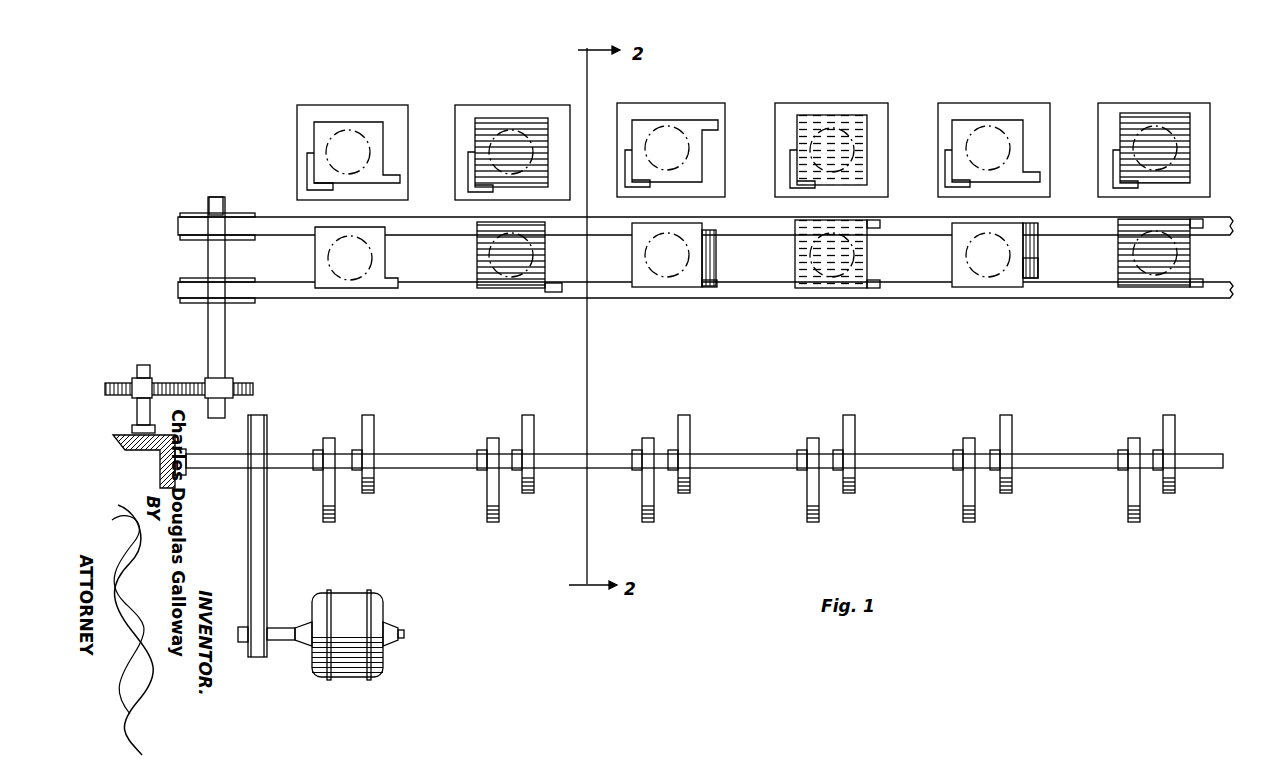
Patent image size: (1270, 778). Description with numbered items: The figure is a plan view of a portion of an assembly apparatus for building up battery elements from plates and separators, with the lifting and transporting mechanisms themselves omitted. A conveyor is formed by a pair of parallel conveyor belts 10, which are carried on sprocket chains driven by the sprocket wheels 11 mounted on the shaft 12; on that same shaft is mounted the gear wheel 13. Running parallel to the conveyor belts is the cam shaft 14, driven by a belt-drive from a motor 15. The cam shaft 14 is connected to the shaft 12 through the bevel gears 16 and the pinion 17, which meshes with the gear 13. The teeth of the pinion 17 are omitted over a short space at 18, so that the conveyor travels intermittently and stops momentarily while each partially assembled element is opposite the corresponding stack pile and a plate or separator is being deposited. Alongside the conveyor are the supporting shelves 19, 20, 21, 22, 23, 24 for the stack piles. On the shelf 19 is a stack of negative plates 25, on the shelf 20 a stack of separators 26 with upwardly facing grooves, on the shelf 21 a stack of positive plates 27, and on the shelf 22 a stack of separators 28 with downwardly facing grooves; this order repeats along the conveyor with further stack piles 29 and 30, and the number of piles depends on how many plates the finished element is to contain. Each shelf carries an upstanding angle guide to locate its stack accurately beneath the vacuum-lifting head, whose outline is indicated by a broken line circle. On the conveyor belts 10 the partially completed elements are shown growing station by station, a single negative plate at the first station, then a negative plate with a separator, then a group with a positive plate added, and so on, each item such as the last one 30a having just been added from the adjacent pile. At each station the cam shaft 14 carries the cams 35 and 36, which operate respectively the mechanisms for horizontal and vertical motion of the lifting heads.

The conveyor belts 10 is at (180, 290).
The sprocket wheels 11 is at (230, 216).
The shaft 12 is at (226, 342).
The gear wheel 13 is at (255, 387).
The cam shaft 14 is at (219, 466).
The motor 15 is at (341, 593).
The bevel gears 16 is at (150, 470).
The pinion 17 is at (117, 382).
The toothless space 18 is at (152, 384).
The supporting shelf 19 is at (305, 106).
The supporting shelf 20 is at (462, 107).
The supporting shelf 21 is at (627, 108).
The supporting shelf 22 is at (787, 106).
The supporting shelf 23 is at (945, 108).
The supporting shelf 24 is at (1105, 108).
The stack of negative plates 25 is at (343, 125).
The stack of separators 26 is at (500, 120).
The stack of positive plates 27 is at (668, 125).
The stack of separators 28 is at (838, 118).
The stack pile 29 is at (1000, 125).
The stack pile 30 is at (1155, 118).
The plate 30a is at (1130, 291).
The cam 35 is at (330, 520).
The cam 36 is at (372, 433).